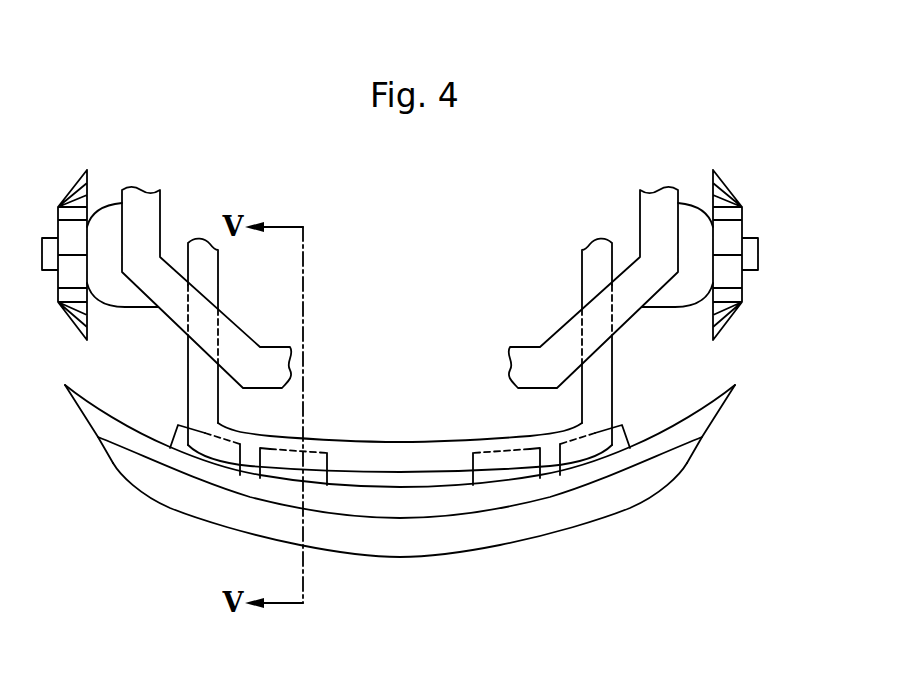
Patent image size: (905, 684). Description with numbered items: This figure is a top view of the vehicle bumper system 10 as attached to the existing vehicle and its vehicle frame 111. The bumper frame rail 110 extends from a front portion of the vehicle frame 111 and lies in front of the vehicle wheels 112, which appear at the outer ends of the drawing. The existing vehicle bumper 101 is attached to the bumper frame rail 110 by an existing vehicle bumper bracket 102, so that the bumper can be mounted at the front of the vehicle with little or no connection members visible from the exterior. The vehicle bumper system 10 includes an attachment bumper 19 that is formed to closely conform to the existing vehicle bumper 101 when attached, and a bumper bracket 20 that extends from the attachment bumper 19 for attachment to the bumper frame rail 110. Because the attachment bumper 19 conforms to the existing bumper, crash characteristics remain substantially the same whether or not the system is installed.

The vehicle bumper system 10 is at (542, 527).
The attachment bumper 19 is at (348, 533).
The bumper bracket 20 is at (500, 475).
The existing vehicle bumper 101 is at (680, 435).
The existing vehicle bumper bracket 102 is at (605, 455).
The bumper frame rail 110 is at (597, 403).
The vehicle frame 111 is at (633, 290).
The vehicle wheels 112 is at (727, 187).